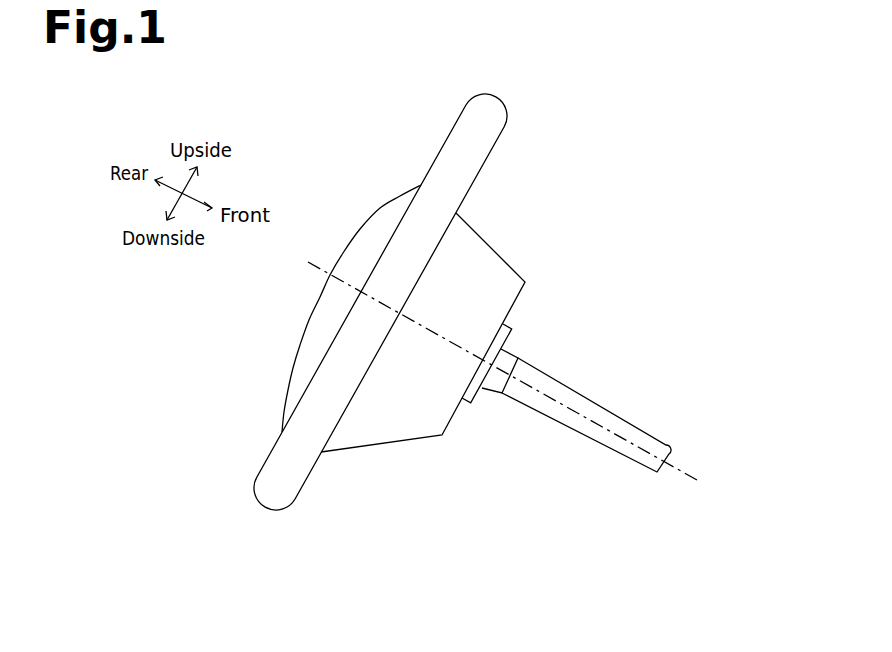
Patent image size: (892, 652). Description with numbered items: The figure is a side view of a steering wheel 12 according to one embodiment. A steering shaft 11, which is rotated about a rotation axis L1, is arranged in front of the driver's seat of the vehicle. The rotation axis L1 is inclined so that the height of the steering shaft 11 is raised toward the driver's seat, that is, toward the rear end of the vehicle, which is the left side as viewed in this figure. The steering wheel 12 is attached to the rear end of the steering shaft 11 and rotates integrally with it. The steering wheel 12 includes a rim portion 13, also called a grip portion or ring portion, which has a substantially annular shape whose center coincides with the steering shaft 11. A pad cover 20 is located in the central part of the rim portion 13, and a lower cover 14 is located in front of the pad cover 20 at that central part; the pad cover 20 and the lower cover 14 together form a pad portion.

The steering shaft 11 is at (607, 410).
The steering wheel 12 is at (402, 304).
The rim portion 13 is at (263, 502).
The lower cover 14 is at (391, 440).
The pad cover 20 is at (313, 323).
The rotation axis L1 is at (683, 473).